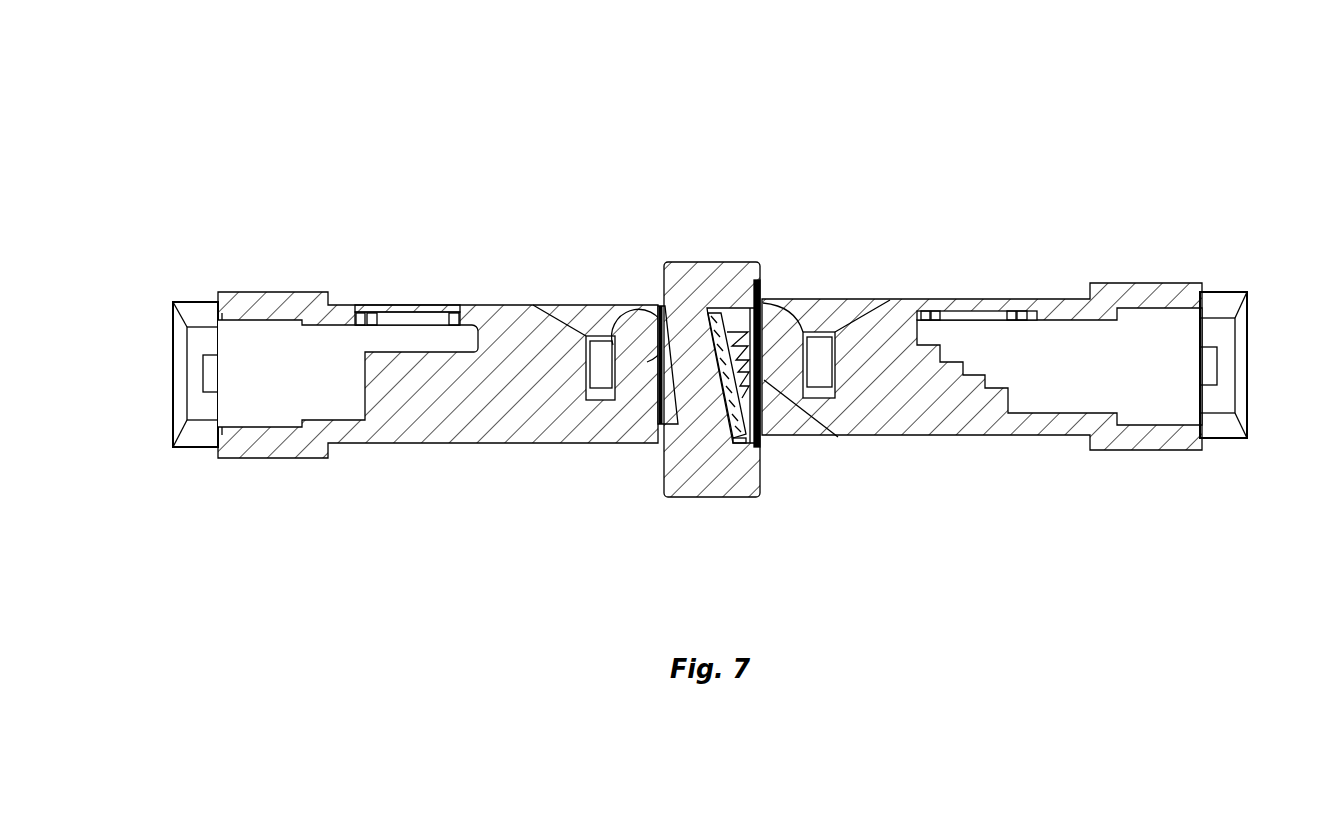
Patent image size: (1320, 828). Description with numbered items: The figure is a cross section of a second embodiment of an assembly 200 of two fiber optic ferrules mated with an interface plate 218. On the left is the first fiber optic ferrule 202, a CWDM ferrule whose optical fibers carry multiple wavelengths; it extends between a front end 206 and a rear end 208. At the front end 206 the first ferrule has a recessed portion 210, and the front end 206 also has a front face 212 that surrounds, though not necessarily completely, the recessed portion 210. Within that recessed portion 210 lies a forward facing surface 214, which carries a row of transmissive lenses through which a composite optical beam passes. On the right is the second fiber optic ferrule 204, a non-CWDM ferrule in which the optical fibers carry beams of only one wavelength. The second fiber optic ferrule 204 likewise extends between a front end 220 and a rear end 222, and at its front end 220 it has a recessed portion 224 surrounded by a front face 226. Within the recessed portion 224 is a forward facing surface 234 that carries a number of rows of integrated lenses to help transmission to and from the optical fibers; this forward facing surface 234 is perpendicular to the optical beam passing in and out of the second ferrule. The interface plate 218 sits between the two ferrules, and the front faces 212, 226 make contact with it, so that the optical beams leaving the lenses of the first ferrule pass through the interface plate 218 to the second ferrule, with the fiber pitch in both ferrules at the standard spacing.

The assembly 200 is at (860, 151).
The first fiber optic ferrule 202 is at (442, 321).
The second fiber optic ferrule 204 is at (982, 324).
The front end 206 is at (716, 356).
The rear end 208 is at (162, 452).
The recessed portion 210 is at (655, 403).
The front face 212 is at (647, 305).
The forward facing surface 214 is at (615, 335).
The interface plate 218 is at (692, 260).
The front end 220 is at (768, 281).
The rear end 222 is at (1255, 275).
The recessed portion 224 is at (765, 340).
The front face 226 is at (764, 440).
The forward facing surface 234 is at (822, 434).